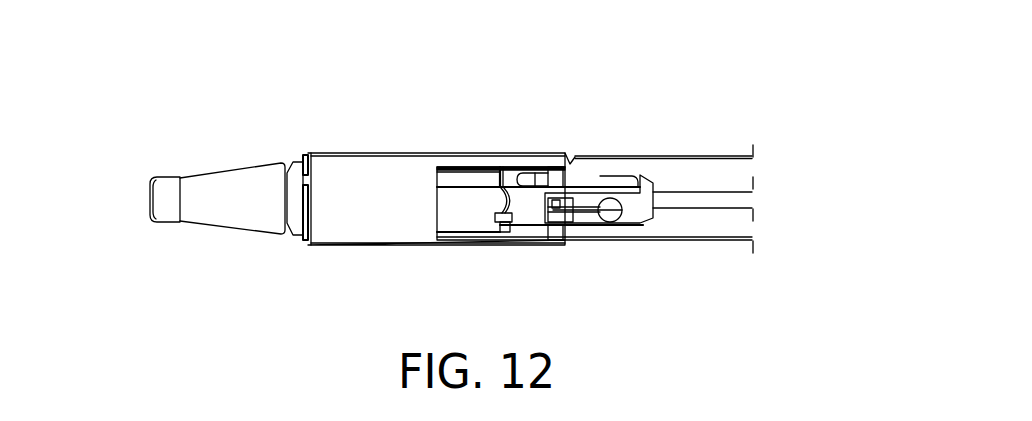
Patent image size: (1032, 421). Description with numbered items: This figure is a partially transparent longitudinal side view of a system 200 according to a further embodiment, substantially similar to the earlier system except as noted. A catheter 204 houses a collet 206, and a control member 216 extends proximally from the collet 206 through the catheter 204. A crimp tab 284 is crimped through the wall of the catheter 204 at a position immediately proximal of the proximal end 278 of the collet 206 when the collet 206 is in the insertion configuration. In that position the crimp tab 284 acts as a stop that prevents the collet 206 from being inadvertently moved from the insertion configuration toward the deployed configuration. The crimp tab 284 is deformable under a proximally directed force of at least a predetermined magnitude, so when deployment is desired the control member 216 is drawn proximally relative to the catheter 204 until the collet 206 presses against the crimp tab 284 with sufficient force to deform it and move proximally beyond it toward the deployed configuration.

The system 200 is at (344, 122).
The catheter 204 is at (718, 177).
The collet 206 is at (371, 153).
The control member 216 is at (670, 200).
The proximal end 278 is at (552, 163).
The crimp tab 284 is at (569, 161).